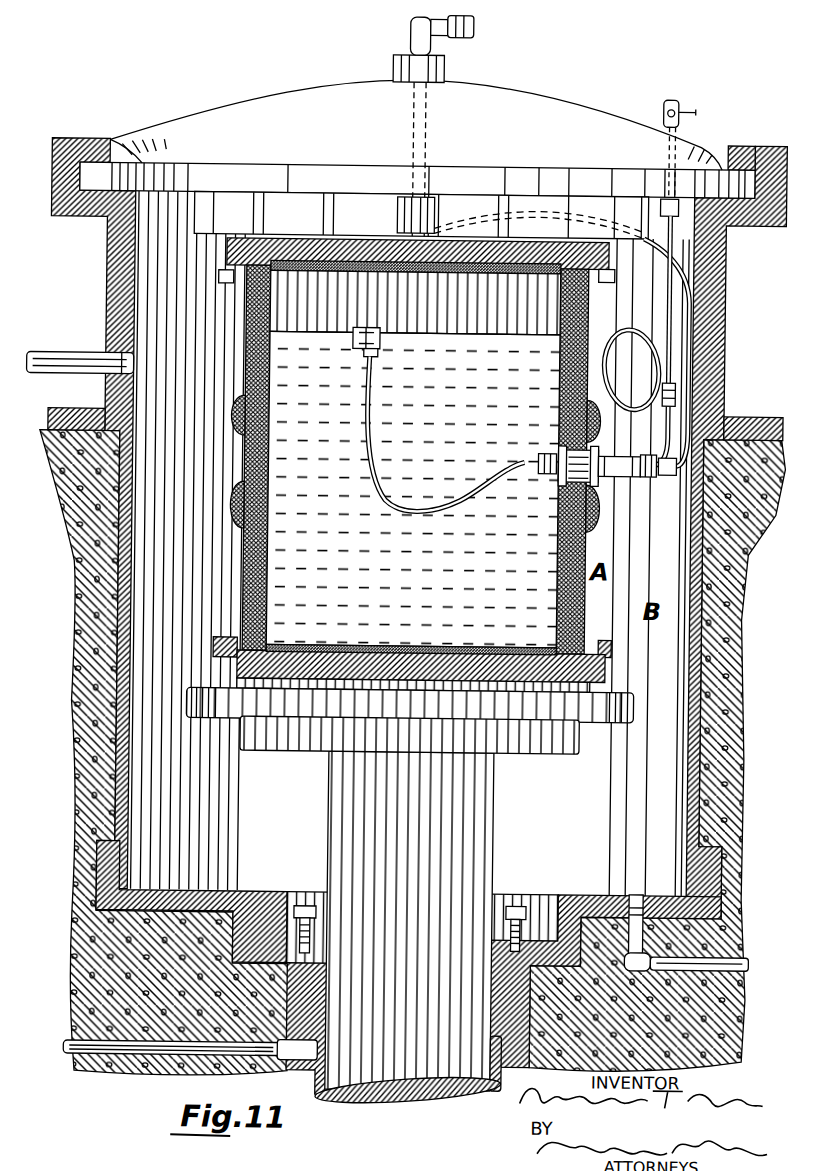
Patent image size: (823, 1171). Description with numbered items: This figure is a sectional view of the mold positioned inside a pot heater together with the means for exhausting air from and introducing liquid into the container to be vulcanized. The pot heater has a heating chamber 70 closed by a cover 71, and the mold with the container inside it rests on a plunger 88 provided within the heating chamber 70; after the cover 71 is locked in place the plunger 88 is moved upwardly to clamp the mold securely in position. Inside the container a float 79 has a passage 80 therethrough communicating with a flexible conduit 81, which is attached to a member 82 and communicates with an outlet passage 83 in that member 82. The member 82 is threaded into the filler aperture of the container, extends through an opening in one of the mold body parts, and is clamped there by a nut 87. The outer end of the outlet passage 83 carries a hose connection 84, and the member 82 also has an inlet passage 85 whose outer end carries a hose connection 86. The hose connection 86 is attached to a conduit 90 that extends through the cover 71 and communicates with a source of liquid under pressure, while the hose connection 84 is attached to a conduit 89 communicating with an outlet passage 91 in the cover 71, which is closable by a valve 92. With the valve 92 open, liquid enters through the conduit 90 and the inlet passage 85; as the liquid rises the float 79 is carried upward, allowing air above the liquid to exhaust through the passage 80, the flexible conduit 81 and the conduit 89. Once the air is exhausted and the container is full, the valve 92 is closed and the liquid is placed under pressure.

The heating chamber 70 is at (569, 864).
The cover 71 is at (290, 97).
The float 79 is at (383, 328).
The passage 80 is at (352, 327).
The flexible conduit 81 is at (368, 432).
The member 82 is at (606, 482).
The outlet passage 83 is at (612, 452).
The hose connection 84 is at (673, 410).
The inlet passage 85 is at (617, 477).
The hose connection 86 is at (644, 477).
The nut 87 is at (597, 487).
The plunger 88 is at (564, 748).
The conduit 89 is at (660, 326).
The conduit 90 is at (689, 297).
The outlet passage 91 is at (676, 148).
The valve 92 is at (678, 100).